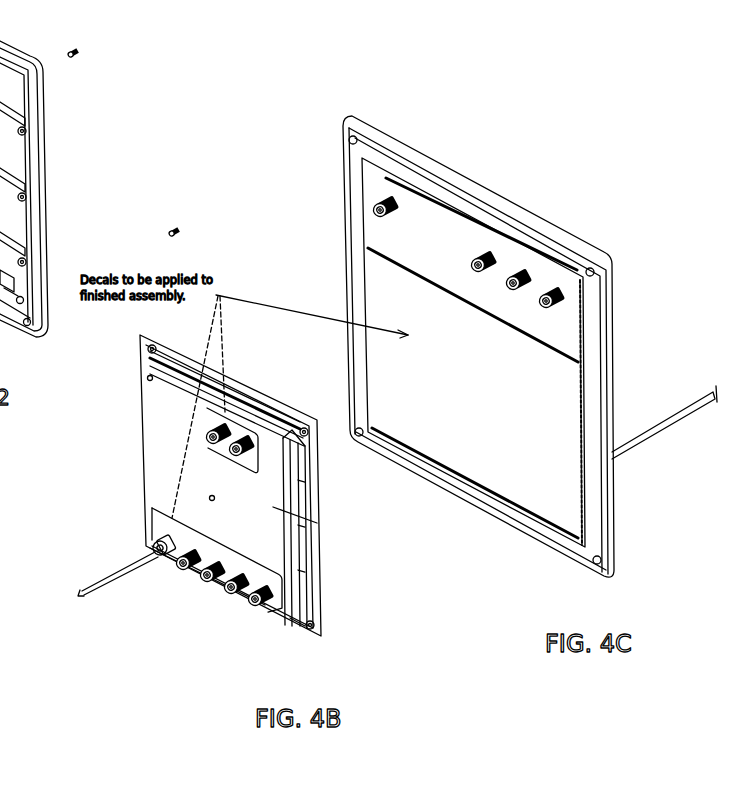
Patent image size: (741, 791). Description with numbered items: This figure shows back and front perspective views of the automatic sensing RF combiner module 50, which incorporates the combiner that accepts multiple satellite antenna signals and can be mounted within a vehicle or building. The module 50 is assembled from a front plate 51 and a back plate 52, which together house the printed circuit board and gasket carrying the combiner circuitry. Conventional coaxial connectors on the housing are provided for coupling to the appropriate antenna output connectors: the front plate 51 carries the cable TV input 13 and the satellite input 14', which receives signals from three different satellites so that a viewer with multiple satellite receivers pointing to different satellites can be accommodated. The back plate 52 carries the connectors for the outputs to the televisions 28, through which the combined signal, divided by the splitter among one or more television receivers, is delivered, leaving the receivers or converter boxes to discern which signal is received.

In FIG. 4B, the module 50 is at (130, 448).
In FIG. 4C, the module 50 is at (316, 102).
In FIG. 4C, the cable TV input 13 is at (388, 202).
In FIG. 4C, the satellite input 14' is at (529, 233).
In FIG. 4C, the front plate 51 is at (362, 287).
In FIG. 4B, the back plate 52 is at (275, 508).
In FIG. 4B, the television 28 is at (266, 629).